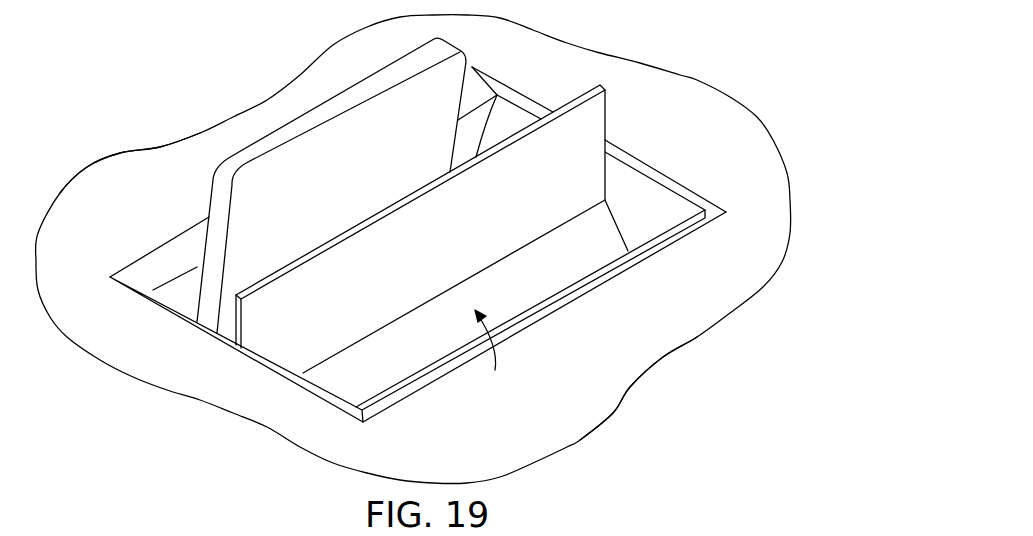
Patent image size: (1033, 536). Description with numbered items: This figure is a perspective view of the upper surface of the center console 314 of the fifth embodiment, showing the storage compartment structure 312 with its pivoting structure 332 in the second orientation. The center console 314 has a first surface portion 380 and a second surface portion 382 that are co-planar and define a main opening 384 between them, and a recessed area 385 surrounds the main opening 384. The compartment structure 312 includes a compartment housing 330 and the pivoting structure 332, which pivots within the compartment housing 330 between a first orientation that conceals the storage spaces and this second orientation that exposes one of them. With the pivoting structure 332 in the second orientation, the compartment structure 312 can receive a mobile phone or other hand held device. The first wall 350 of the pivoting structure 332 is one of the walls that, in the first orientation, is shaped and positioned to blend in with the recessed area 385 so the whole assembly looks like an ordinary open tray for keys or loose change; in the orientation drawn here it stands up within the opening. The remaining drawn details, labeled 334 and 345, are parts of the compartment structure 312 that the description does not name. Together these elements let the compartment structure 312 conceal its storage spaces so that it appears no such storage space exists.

The compartment structure 312 is at (570, 100).
The center console 314 is at (697, 79).
The compartment housing 330 is at (183, 293).
The pivoting structure 332 is at (497, 351).
The tilting plate 334 is at (647, 218).
The rear panel 345 is at (288, 172).
The first wall 350 is at (432, 187).
The first surface portion 380 is at (168, 177).
The second surface portion 382 is at (630, 335).
The main opening 384 is at (655, 193).
The recessed area 385 is at (687, 197).